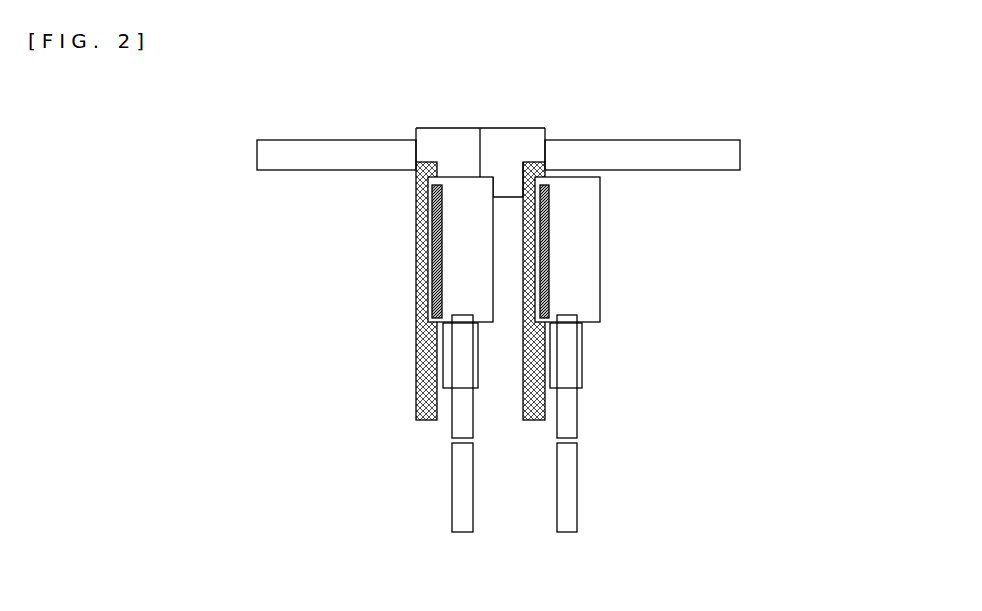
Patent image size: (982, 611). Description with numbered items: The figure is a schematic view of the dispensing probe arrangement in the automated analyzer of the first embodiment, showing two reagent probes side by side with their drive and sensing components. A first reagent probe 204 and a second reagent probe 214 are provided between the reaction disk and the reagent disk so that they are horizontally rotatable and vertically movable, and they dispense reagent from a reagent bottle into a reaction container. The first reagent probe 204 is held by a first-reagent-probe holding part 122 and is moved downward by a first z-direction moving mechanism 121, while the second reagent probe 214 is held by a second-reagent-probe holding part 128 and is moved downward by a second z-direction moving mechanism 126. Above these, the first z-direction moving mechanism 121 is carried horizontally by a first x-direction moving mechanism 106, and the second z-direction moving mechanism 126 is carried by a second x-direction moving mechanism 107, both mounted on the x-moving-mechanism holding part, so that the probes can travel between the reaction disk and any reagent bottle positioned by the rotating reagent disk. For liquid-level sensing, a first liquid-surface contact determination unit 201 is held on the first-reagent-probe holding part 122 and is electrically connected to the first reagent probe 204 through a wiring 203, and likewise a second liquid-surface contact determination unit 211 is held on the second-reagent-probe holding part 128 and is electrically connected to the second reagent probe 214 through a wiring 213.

The first x-direction moving mechanism 106 is at (447, 139).
The second x-direction moving mechanism 107 is at (528, 140).
The first z-direction moving mechanism 121 is at (418, 198).
The first-reagent-probe holding part 122 is at (468, 252).
The first liquid-surface contact determination unit 201 is at (417, 310).
The wiring 203 is at (468, 313).
The first reagent probe 204 is at (462, 503).
The second liquid-surface contact determination unit 211 is at (548, 235).
The second-reagent-probe holding part 128 is at (575, 287).
The wiring 213 is at (571, 314).
The second z-direction moving mechanism 126 is at (528, 372).
The second reagent probe 214 is at (565, 517).